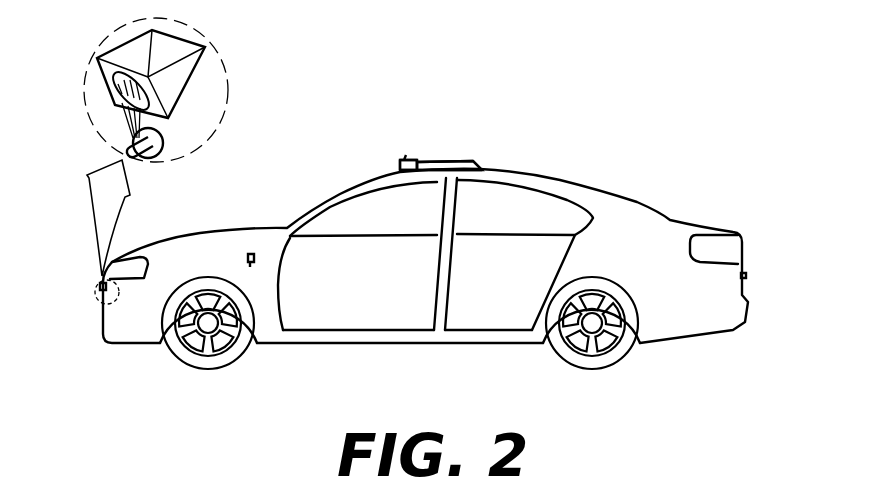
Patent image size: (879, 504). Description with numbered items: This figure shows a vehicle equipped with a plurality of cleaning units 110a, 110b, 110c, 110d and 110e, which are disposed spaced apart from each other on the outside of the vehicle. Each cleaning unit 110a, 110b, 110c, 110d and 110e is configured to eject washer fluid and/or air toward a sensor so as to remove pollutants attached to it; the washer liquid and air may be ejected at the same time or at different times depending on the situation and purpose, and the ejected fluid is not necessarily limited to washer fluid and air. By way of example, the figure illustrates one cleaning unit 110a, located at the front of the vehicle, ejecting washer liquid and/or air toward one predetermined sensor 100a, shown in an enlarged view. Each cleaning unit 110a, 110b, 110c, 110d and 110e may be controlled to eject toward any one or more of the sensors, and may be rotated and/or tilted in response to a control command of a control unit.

The sensor 100a is at (112, 80).
The cleaning unit 110a is at (98, 287).
The cleaning unit 110b is at (250, 257).
The cleaning unit 110c is at (405, 158).
The cleaning unit 110d is at (413, 166).
The cleaning unit 110e is at (743, 276).